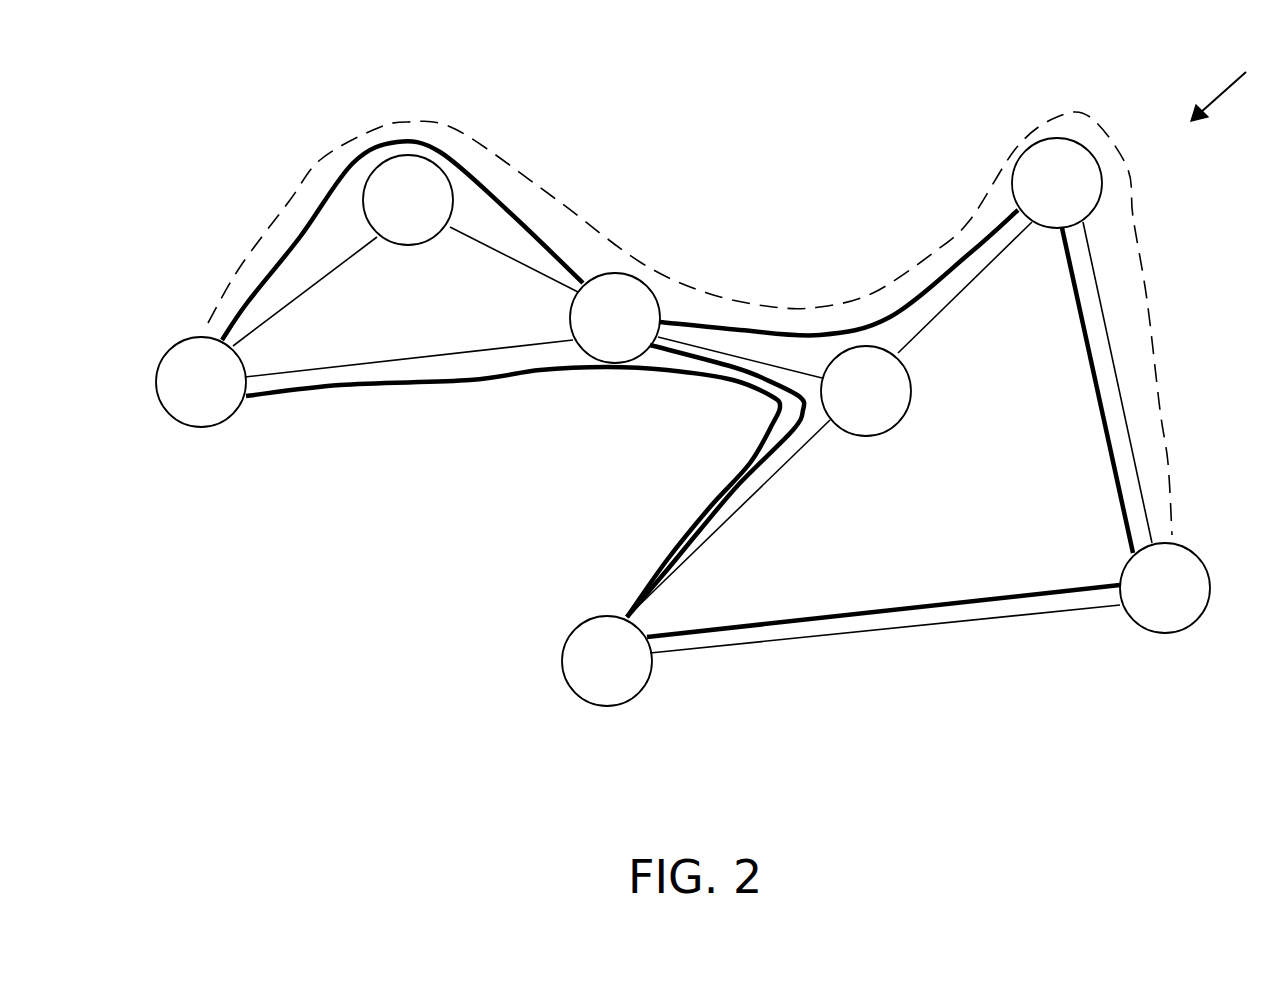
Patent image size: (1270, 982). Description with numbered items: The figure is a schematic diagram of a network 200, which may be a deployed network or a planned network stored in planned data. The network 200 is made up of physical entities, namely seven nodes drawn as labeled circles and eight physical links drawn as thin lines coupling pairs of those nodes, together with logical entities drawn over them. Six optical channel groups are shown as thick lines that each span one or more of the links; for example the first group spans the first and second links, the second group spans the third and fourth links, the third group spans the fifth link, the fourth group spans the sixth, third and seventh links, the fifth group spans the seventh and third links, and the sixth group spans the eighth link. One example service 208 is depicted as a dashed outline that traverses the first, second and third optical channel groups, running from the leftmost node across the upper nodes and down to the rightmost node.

The network 200 is at (1225, 84).
The service 208 is at (768, 303).